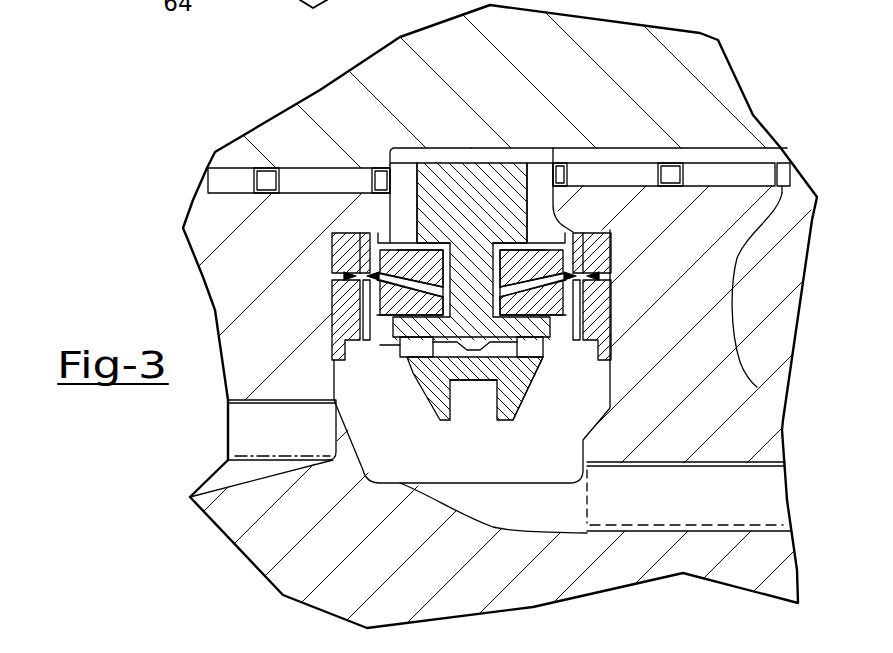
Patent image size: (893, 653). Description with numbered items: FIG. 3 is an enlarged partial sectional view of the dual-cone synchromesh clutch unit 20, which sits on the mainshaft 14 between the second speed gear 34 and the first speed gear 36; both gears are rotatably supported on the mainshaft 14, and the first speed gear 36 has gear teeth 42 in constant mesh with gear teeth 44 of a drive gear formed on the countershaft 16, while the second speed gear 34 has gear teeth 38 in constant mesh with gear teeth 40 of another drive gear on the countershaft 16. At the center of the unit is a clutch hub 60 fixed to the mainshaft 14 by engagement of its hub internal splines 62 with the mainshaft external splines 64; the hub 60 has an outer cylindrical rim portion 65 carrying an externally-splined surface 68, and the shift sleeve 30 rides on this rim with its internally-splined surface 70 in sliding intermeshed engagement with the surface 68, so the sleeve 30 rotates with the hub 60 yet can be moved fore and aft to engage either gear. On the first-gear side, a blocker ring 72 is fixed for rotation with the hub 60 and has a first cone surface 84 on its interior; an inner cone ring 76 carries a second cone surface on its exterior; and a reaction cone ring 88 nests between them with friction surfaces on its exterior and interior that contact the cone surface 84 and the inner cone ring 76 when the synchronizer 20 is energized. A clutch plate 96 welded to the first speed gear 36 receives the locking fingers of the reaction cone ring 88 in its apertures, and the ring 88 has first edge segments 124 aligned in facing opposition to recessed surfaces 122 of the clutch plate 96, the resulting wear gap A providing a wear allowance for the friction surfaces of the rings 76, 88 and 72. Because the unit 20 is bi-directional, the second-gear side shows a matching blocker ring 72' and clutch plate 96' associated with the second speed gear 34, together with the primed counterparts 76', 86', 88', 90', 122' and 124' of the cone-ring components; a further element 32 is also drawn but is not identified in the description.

The mainshaft 14 is at (648, 58).
The countershaft 16 is at (345, 450).
The synchromesh clutch unit 20 is at (368, 403).
The shift sleeve 30 is at (513, 393).
The slot 32 is at (450, 412).
The second speed gear 34 is at (223, 288).
The first speed gear 36 is at (712, 390).
The gear teeth 38 is at (250, 422).
The gear teeth 40 is at (267, 560).
The gear teeth 42 is at (757, 508).
The gear teeth 44 is at (588, 492).
The clutch hub 60 is at (472, 200).
The hub internal splines 62 is at (390, 148).
The mainshaft external splines 64 is at (523, 150).
The outer cylindrical rim portion 65 is at (510, 380).
The externally-splined surface 68 is at (480, 360).
The internally-splined surface 70 is at (410, 363).
The blocker ring 72 is at (550, 366).
The blocker ring 72' is at (281, 424).
The inner cone ring 76 is at (557, 169).
The sleeve 76' is at (340, 154).
The first cone surface 84 is at (592, 302).
The outer ring 86' is at (330, 249).
The reaction cone ring 88 is at (600, 286).
The wedge member 88' is at (359, 285).
The inner ring 90' is at (329, 332).
The clutch plate 96 is at (610, 306).
The clutch plate 96' is at (238, 248).
The recessed surface 122 is at (649, 271).
The surface 122' is at (341, 317).
The first edge segments 124 is at (645, 305).
The surface 124' is at (335, 268).
The wear gap A is at (627, 278).